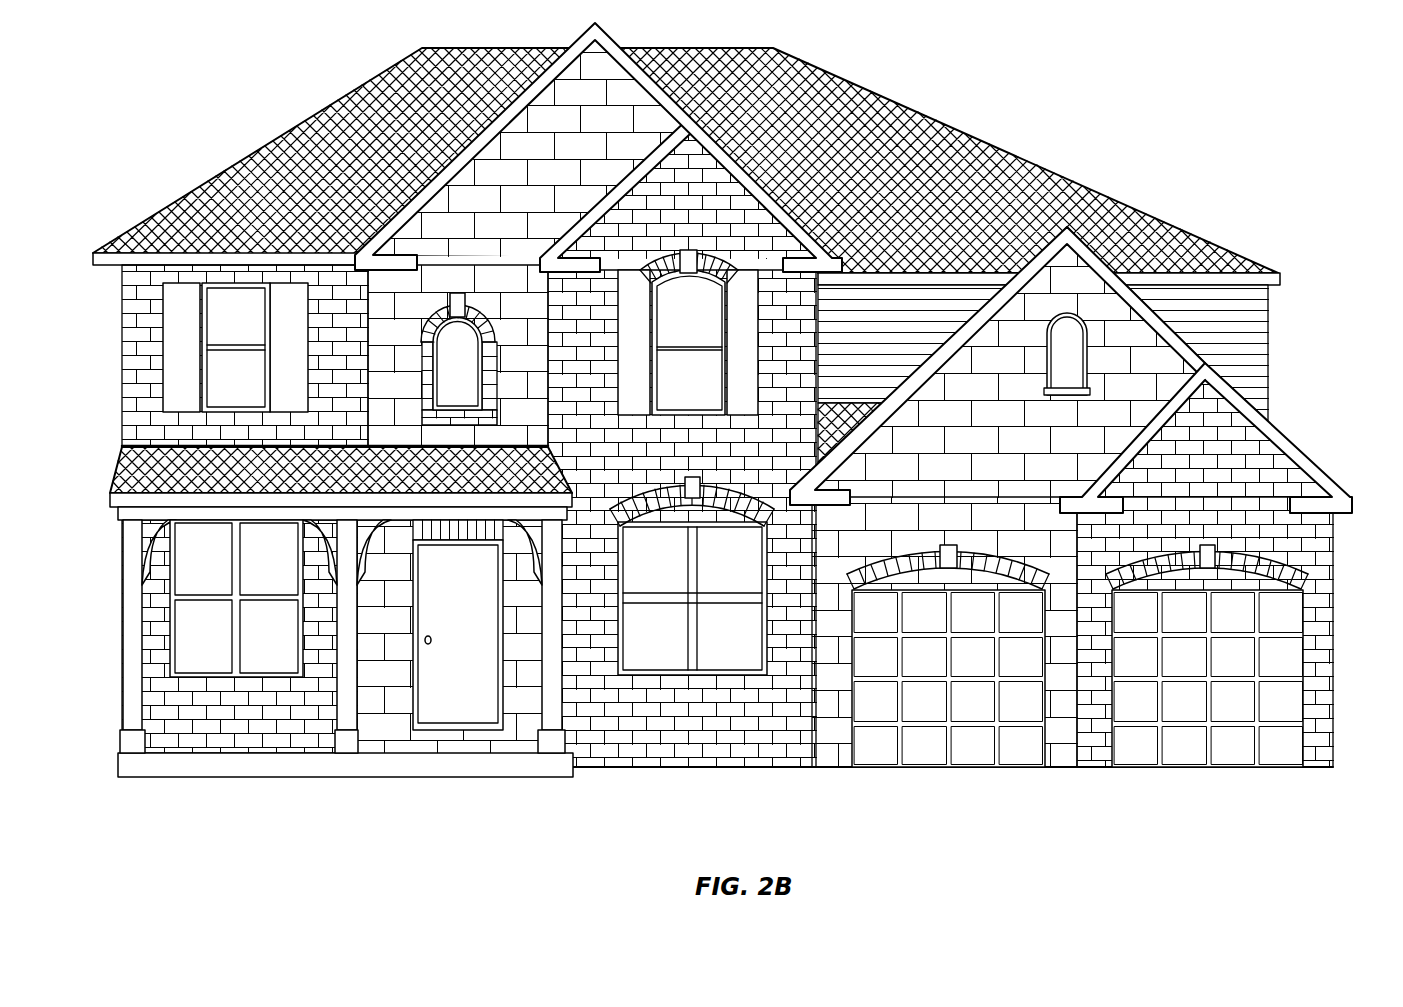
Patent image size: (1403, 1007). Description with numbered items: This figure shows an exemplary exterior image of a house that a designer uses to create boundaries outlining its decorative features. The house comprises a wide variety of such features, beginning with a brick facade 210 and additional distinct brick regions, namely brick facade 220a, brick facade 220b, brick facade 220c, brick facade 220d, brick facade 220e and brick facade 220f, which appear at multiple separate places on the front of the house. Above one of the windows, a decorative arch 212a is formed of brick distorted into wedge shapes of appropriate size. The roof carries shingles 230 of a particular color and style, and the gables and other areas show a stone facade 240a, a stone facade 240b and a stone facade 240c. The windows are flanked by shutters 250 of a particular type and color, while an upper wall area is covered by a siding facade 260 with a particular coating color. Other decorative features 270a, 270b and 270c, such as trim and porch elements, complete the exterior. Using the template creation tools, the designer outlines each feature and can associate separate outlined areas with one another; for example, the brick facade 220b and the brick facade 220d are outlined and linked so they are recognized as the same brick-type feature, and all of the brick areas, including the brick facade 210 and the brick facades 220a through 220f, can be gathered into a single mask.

The brick facade 210 is at (681, 742).
The decorative arch 212a is at (718, 264).
The brick facade 220a is at (996, 570).
The brick facade 220b is at (1318, 548).
The brick facade 220c is at (434, 304).
The brick facade 220d is at (138, 370).
The brick facade 220e is at (190, 707).
The brick facade 220f is at (450, 525).
The shingles 230 is at (893, 114).
The stone facade 240a is at (1113, 330).
The stone facade 240b is at (579, 120).
The stone facade 240c is at (393, 627).
The shutters 250 is at (178, 318).
The siding facade 260 is at (1253, 310).
The decorative feature 270a is at (600, 39).
The decorative feature 270b is at (350, 718).
The decorative feature 270c is at (1081, 318).